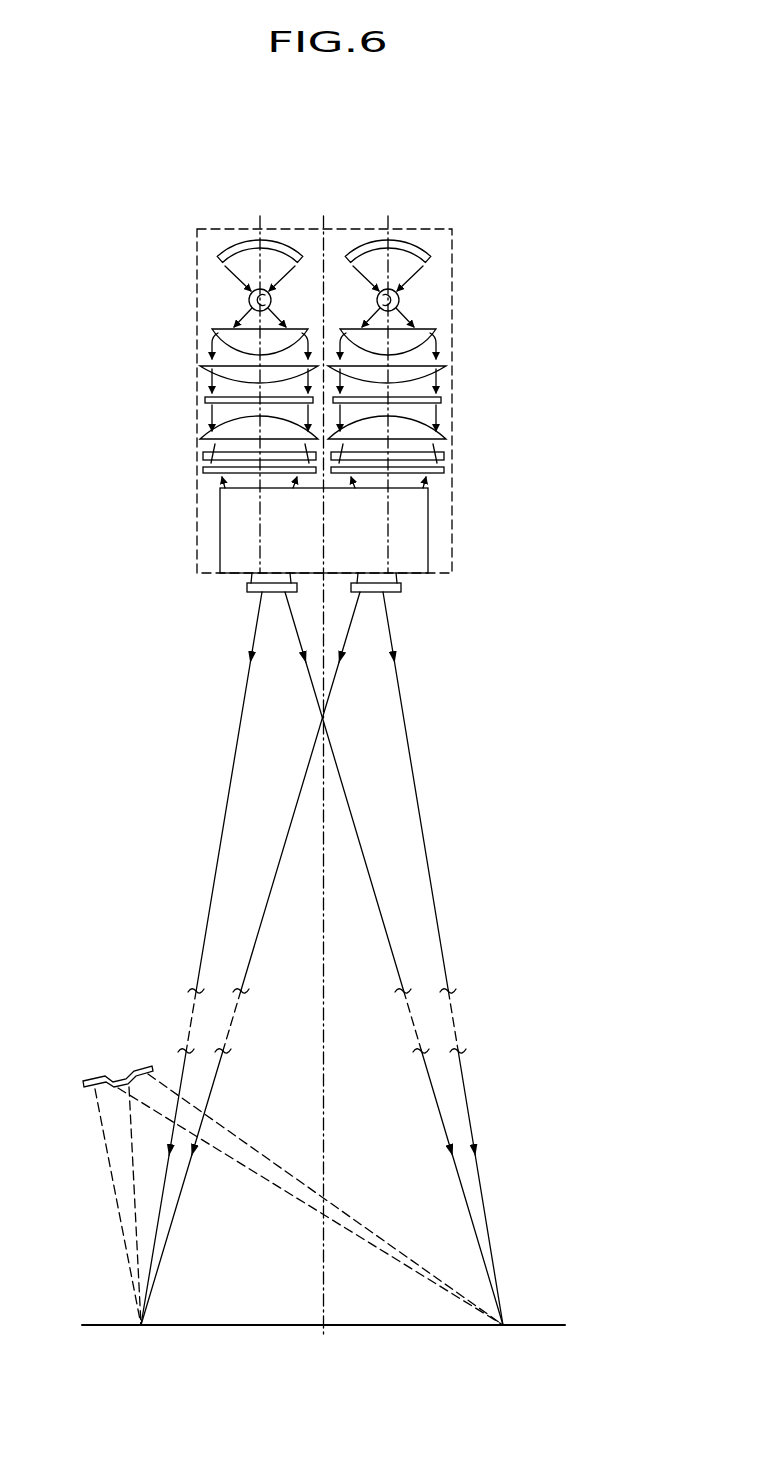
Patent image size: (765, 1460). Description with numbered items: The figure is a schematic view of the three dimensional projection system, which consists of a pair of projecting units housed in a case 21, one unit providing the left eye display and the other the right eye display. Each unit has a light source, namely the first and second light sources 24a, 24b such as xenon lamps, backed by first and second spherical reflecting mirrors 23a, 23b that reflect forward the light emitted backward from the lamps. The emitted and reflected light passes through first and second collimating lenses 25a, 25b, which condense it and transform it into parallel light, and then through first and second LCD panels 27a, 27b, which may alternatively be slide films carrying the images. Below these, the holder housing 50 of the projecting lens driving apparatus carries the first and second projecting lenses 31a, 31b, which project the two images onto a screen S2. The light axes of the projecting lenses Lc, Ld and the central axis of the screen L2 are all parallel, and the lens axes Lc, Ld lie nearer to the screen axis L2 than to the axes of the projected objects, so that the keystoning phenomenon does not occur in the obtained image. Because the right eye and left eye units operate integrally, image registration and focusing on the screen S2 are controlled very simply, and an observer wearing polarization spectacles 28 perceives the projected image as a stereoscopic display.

The case 21 is at (194, 231).
The first spherical reflecting mirror 23a is at (218, 264).
The second spherical reflecting mirror 23b is at (430, 264).
The first light source 24a is at (249, 299).
The second light source 24b is at (400, 299).
The first collimating lens 25a is at (185, 327).
The second collimating lens 25b is at (463, 328).
The first LCD panel 27a is at (205, 457).
The second LCD panel 27b is at (445, 457).
The holder housing 50 is at (430, 520).
The first projecting lens 31a is at (247, 586).
The second projecting lens 31b is at (401, 586).
The light axis of projecting lens Lc is at (272, 603).
The light axis of projecting lens Ld is at (375, 603).
The central axis of the screen L2 is at (323, 1027).
The polarization spectacles 28 is at (105, 1076).
The screen S2 is at (287, 1322).